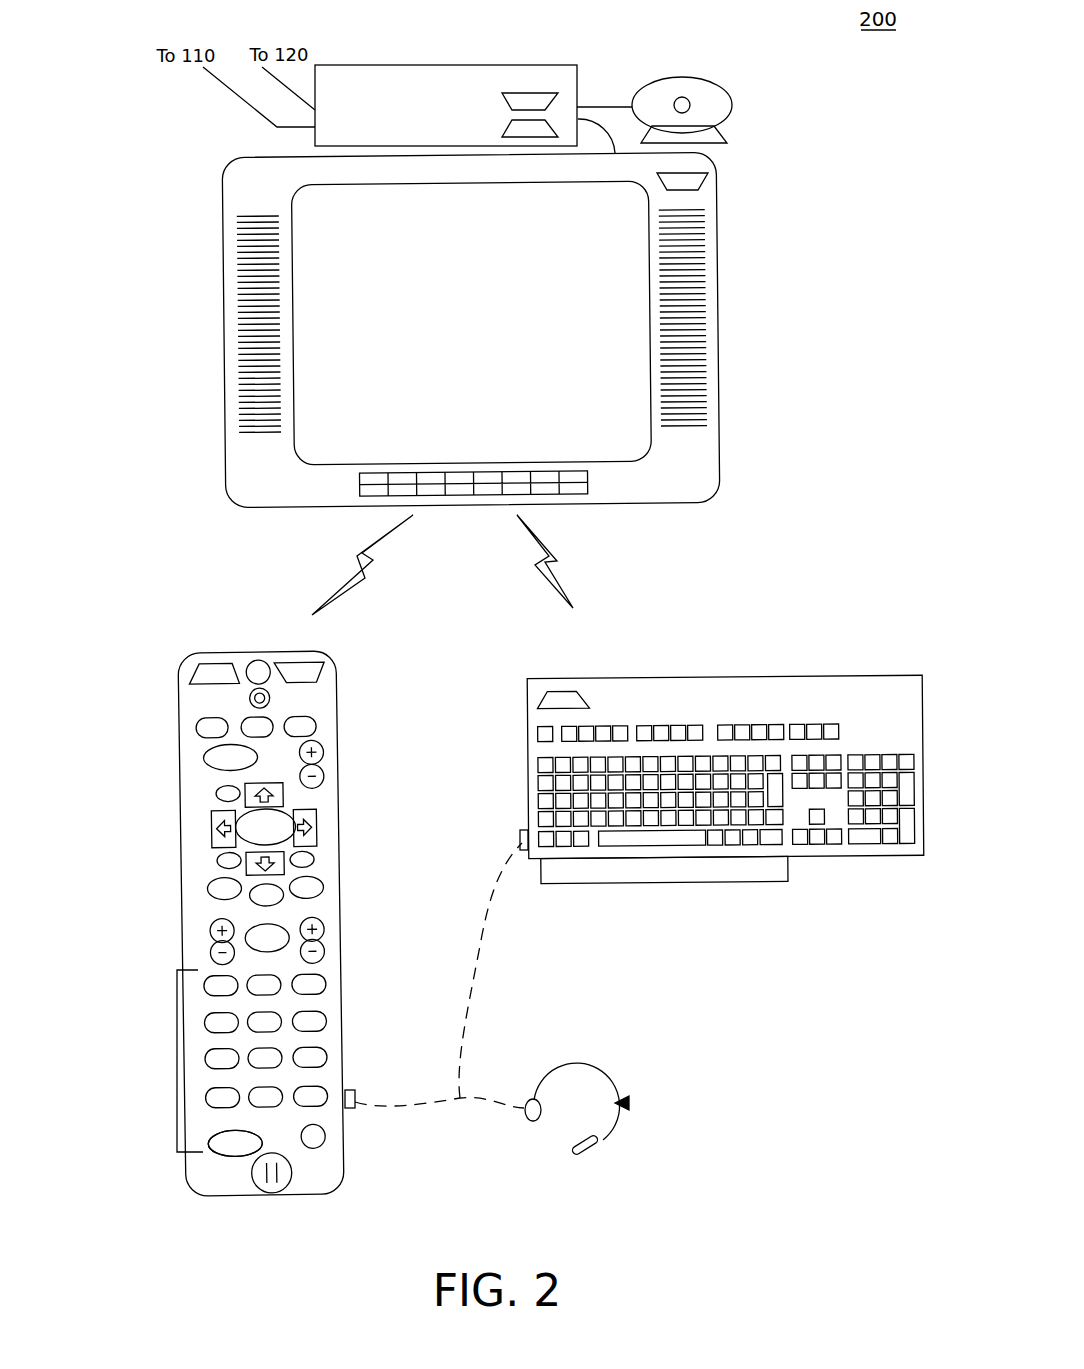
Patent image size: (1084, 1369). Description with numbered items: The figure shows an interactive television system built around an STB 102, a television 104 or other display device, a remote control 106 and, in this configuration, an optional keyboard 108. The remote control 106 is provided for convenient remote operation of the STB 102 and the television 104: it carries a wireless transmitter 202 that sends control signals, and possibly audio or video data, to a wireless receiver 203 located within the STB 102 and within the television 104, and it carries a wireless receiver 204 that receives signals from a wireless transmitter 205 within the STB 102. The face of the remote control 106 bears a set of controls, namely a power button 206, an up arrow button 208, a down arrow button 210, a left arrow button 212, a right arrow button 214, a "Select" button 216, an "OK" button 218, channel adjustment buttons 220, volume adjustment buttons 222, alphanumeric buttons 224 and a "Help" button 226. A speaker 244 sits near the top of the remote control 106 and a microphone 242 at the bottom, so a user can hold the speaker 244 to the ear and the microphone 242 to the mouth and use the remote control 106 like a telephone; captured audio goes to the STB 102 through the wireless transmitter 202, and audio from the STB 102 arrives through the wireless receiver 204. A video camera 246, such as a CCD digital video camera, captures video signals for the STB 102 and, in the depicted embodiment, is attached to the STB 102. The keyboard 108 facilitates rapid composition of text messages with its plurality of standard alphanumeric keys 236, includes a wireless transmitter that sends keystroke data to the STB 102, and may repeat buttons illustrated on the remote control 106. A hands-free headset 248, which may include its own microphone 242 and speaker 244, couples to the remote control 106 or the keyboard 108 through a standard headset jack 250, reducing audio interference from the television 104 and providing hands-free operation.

The STB 102 is at (465, 109).
The television 104 is at (471, 329).
The remote control 106 is at (343, 925).
The keyboard 108 is at (731, 688).
The wireless transmitter 202 is at (200, 672).
The wireless receiver 203 is at (531, 93).
The wireless receiver 204 is at (332, 678).
The wireless transmitter 205 is at (553, 128).
The power button 206 is at (197, 727).
The up arrow button 208 is at (285, 792).
The down arrow button 210 is at (247, 866).
The left arrow button 212 is at (213, 828).
The right arrow button 214 is at (320, 826).
The "Select" button 216 is at (287, 815).
The "OK" button 218 is at (250, 905).
The channel adjustment buttons 220 is at (210, 950).
The volume adjustment buttons 222 is at (327, 950).
The alphanumeric buttons 224 is at (173, 1062).
The "Help" button 226 is at (225, 1157).
The standard alphanumeric keys 236 is at (665, 884).
The microphone 242 is at (268, 1193).
The speaker 244 is at (250, 668).
The video camera 246 is at (730, 102).
The hands-free headset 248 is at (628, 1102).
The headset jack 250 is at (352, 1086).